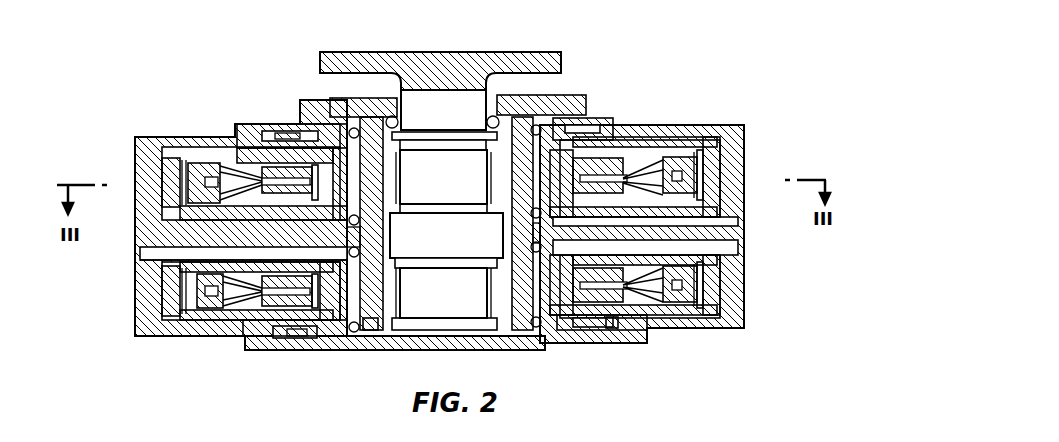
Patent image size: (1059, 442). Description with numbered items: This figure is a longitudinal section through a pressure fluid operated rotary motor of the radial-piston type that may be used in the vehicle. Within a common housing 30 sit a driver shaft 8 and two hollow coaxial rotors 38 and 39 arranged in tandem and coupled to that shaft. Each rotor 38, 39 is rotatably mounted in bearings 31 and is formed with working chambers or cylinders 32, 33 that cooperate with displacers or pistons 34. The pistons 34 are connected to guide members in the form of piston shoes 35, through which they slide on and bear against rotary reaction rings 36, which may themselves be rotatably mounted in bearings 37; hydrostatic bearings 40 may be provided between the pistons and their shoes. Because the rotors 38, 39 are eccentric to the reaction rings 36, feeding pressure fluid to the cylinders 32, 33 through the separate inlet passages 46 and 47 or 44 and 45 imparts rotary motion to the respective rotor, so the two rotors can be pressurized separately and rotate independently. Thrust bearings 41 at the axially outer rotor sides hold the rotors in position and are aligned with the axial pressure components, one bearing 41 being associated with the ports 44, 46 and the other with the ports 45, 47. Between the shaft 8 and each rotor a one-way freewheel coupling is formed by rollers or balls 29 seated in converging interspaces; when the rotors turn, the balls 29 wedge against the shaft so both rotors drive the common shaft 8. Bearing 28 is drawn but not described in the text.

The driver shaft 8 is at (448, 100).
The ball bearing 28 is at (495, 115).
The rollers or balls 29 is at (397, 182).
The common housing 30 is at (150, 142).
The bearings 31 is at (533, 124).
The working chamber or cylinder 32 is at (320, 140).
The working chamber or cylinder 33 is at (335, 330).
The displacer or piston 34 is at (255, 170).
The piston shoe 35 is at (240, 162).
The rotary reaction ring 36 is at (202, 172).
The bearings 37 is at (182, 185).
The rotor 38 is at (333, 127).
The rotor 39 is at (371, 330).
The hydrostatic bearings 40 is at (285, 178).
The thrust bearings 41 is at (307, 142).
The inlet passage or port 44 is at (733, 218).
The inlet passage or port 45 is at (735, 247).
The inlet passage or port 46 is at (148, 253).
The inlet passage or port 47 is at (152, 258).